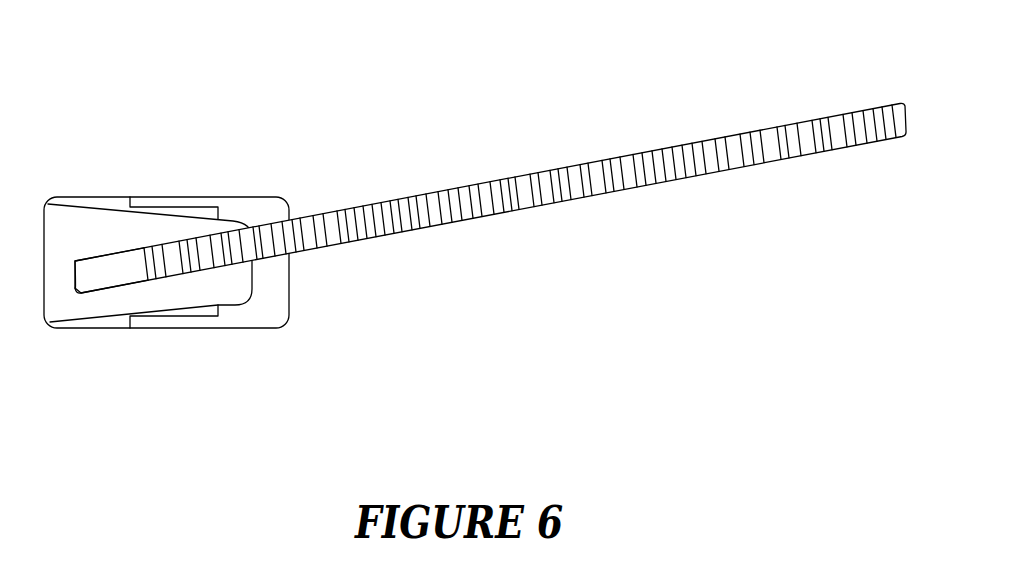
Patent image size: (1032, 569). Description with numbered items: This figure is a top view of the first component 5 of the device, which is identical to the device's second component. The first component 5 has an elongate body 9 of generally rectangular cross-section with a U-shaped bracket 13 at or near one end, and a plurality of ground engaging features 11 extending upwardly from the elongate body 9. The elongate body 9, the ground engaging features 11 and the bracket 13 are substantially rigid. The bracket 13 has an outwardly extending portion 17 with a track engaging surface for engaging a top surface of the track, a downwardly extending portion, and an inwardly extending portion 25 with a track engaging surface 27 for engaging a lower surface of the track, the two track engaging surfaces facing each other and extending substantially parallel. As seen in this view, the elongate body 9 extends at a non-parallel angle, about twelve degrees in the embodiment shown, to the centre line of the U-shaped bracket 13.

The first component 5 is at (207, 78).
The elongate body 9 is at (100, 279).
The ground engaging features 11 is at (575, 195).
The U-shaped bracket 13 is at (62, 220).
The outwardly extending portion 17 is at (155, 297).
The inwardly extending portion 25 is at (277, 211).
The track engaging surface 27 is at (280, 310).